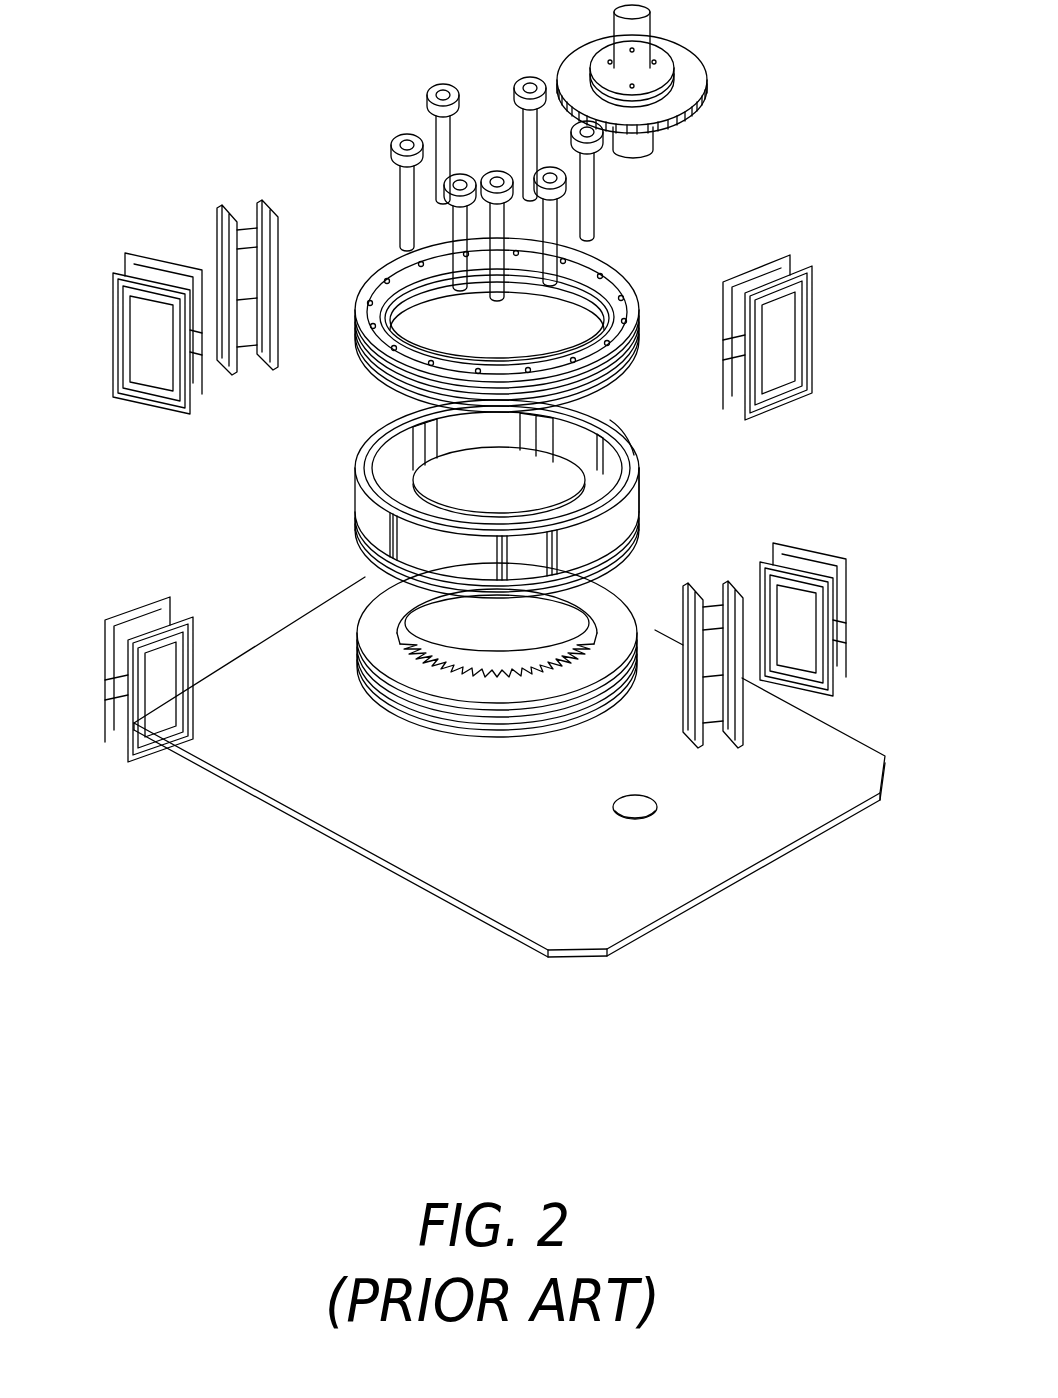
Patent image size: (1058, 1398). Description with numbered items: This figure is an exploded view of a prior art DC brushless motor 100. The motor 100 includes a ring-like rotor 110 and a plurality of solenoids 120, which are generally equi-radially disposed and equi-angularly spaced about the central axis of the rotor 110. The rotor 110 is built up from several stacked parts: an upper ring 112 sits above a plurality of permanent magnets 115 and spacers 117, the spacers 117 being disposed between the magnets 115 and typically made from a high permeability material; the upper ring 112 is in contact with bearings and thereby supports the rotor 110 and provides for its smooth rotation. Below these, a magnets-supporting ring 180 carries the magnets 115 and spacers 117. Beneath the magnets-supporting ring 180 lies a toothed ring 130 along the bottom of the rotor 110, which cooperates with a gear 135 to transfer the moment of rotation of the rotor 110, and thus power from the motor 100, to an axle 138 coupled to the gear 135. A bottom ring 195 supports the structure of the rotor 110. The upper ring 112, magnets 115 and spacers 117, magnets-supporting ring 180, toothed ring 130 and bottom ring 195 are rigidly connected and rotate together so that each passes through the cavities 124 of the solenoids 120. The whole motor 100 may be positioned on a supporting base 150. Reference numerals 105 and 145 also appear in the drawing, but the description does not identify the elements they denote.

The DC brushless motor 100 is at (337, 188).
The fasteners 145 is at (437, 90).
The gear 135 is at (690, 72).
The axle 138 is at (700, 97).
The upper ring 112 is at (357, 338).
The housing ring 105 is at (357, 525).
The spacers 117 is at (367, 556).
The permanent magnets 115 is at (628, 462).
The rotor 110 is at (630, 512).
The magnets-supporting ring 180 is at (395, 579).
The toothed ring 130 is at (640, 585).
The bottom ring 195 is at (430, 700).
The base 150 is at (503, 885).
The solenoids 120 is at (176, 300).
The cavities 124 is at (817, 655).